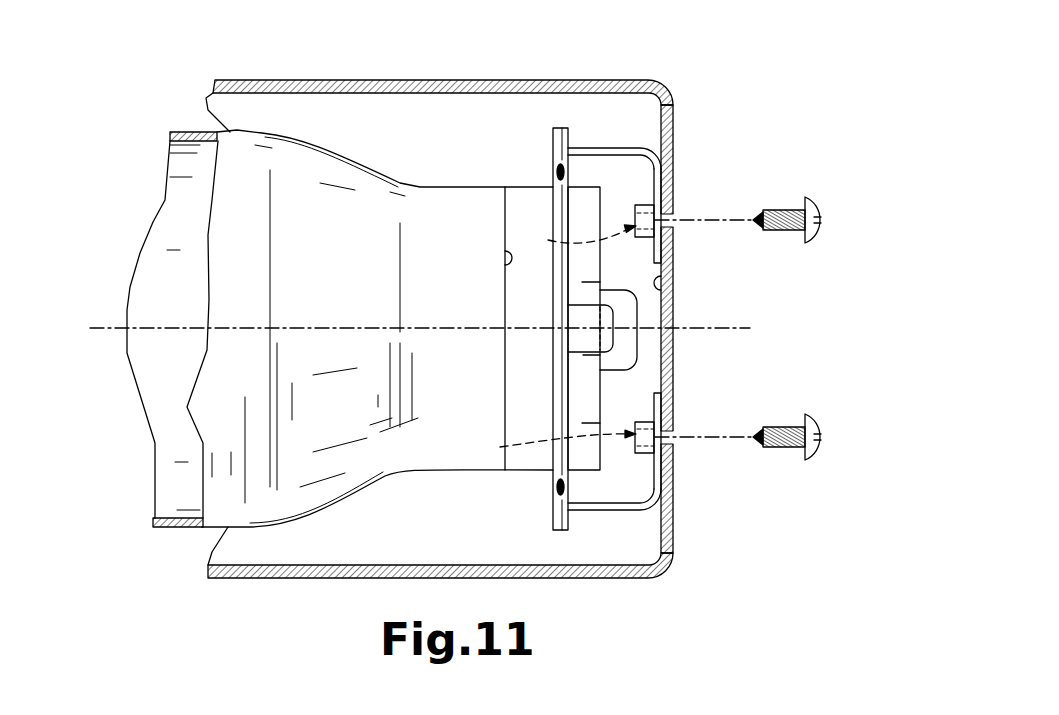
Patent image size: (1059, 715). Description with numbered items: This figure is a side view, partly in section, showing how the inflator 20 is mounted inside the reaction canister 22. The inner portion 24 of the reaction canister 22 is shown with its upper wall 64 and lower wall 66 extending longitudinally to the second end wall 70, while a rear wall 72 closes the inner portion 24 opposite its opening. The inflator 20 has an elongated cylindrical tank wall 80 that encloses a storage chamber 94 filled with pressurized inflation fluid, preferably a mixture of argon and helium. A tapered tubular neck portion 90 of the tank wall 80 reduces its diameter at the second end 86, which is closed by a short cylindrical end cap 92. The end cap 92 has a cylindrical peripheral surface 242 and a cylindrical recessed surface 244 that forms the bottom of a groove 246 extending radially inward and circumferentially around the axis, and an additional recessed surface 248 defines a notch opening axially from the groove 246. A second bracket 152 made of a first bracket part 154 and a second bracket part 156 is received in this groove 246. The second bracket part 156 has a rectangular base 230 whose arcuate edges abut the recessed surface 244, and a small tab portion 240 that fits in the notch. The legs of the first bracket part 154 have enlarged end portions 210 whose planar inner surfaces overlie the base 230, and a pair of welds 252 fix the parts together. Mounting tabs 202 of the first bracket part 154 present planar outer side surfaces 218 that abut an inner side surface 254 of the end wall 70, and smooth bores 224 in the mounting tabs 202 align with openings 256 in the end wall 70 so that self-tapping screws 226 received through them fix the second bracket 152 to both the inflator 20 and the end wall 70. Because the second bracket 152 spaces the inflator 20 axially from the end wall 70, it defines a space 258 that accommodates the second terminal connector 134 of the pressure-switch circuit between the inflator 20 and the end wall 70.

The inflator 20 is at (150, 76).
The reaction canister 22 is at (680, 35).
The inner portion 24 is at (672, 81).
The upper wall 64 is at (386, 80).
The lower wall 66 is at (282, 578).
The second end wall 70 is at (673, 286).
The rear wall 72 is at (238, 548).
The tank wall 80 is at (192, 133).
The second end 86 is at (503, 258).
The tapered tubular neck portion 90 is at (313, 147).
The end cap 92 is at (495, 196).
The storage chamber 94 is at (172, 329).
The second terminal connector 134 is at (627, 313).
The second bracket 152 is at (492, 107).
The first bracket part 154 is at (578, 126).
The second bracket part 156 is at (544, 152).
The mounting tabs 202 is at (613, 148).
The enlarged end portion 210 is at (557, 127).
The planar outer side surface 218 is at (670, 177).
The bores 224 is at (545, 336).
The self-tapping screws 226 is at (808, 214).
The base 230 is at (557, 127).
The tab portion 240 is at (580, 320).
The cylindrical peripheral surface 242 is at (518, 283).
The cylindrical recessed surface 244 is at (563, 360).
The groove 246 is at (558, 380).
The additional recessed surface 248 is at (577, 348).
The welds 252 is at (556, 172).
The inner side surface 254 is at (667, 272).
The openings 256 is at (681, 207).
The space 258 is at (648, 363).